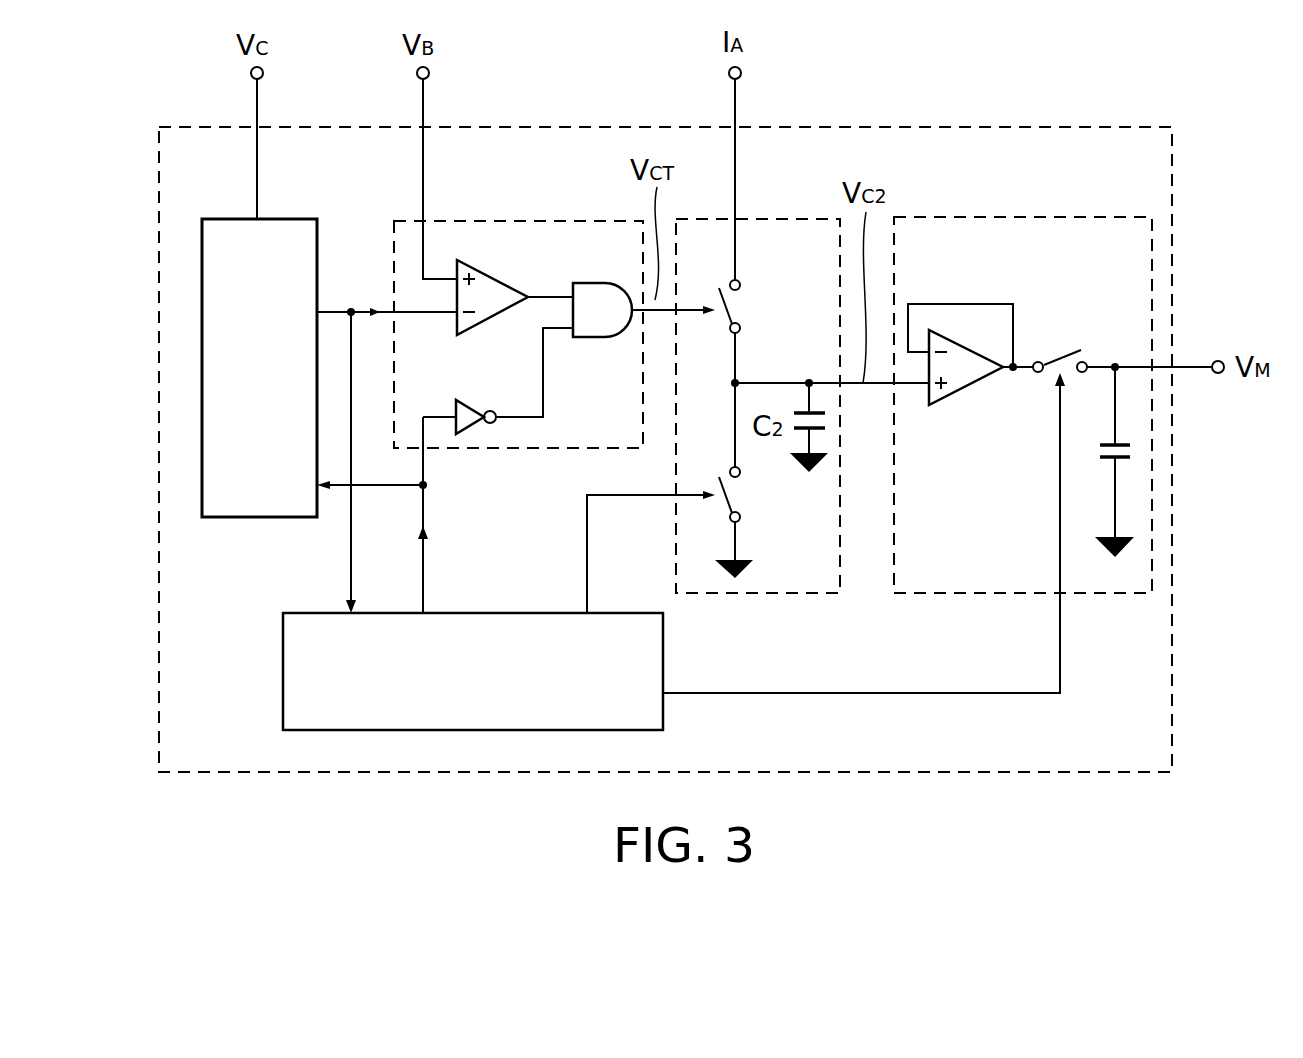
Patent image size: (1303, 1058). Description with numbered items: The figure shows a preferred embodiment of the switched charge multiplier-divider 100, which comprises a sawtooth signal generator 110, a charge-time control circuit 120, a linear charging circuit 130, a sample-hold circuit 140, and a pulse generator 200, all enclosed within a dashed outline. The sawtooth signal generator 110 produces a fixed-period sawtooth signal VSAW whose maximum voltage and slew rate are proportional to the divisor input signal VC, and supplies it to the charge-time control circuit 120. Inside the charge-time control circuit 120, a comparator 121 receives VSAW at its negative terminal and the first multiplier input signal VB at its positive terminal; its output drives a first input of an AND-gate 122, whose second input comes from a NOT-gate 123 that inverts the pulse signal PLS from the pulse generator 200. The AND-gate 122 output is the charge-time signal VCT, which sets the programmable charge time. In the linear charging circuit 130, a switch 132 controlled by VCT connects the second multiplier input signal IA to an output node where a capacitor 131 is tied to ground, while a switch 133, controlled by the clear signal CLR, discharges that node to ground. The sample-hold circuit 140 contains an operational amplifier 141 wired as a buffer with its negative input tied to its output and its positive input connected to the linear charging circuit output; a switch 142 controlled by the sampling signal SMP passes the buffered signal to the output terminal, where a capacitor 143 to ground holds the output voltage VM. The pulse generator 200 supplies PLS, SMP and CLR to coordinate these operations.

The switched charge multiplier-divider 100 is at (1089, 126).
The sawtooth signal generator 110 is at (218, 519).
The charge-time control circuit 120 is at (557, 221).
The comparator 121 is at (480, 258).
The AND-gate 122 is at (603, 341).
The NOT-gate 123 is at (477, 434).
The linear charging circuit 130 is at (782, 219).
The capacitor 131 is at (832, 432).
The switch 132 is at (750, 308).
The switch 133 is at (747, 492).
The sample-hold circuit 140 is at (995, 217).
The operational amplifier 141 is at (987, 378).
The switch 142 is at (1058, 343).
The capacitor 143 is at (1135, 455).
The pulse generator 200 is at (283, 697).